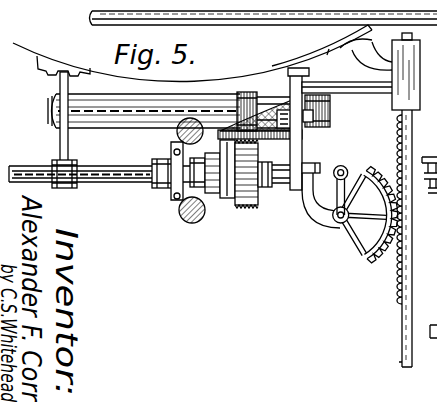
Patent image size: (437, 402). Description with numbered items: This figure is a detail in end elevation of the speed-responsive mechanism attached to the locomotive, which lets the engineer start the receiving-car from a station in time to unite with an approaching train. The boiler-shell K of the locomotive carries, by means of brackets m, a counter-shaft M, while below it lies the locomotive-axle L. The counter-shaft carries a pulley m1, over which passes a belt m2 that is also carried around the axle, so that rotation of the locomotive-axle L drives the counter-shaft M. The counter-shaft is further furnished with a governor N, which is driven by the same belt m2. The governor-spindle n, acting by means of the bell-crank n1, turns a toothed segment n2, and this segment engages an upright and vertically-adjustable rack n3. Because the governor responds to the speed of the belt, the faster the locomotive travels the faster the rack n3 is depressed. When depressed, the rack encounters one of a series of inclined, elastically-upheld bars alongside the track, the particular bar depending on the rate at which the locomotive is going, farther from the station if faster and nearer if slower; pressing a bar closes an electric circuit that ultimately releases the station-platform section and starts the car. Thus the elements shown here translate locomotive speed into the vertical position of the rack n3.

The boiler-shell K is at (262, 66).
The locomotive-axle L is at (95, 88).
The counter-shaft M is at (133, 154).
The governor N is at (171, 151).
The brackets m is at (60, 151).
The pulley m1 is at (277, 188).
The belt m2 is at (240, 96).
The governor-spindle n is at (287, 191).
The bell-crank n1 is at (357, 153).
The toothed segment n2 is at (362, 248).
The rack n3 is at (399, 290).